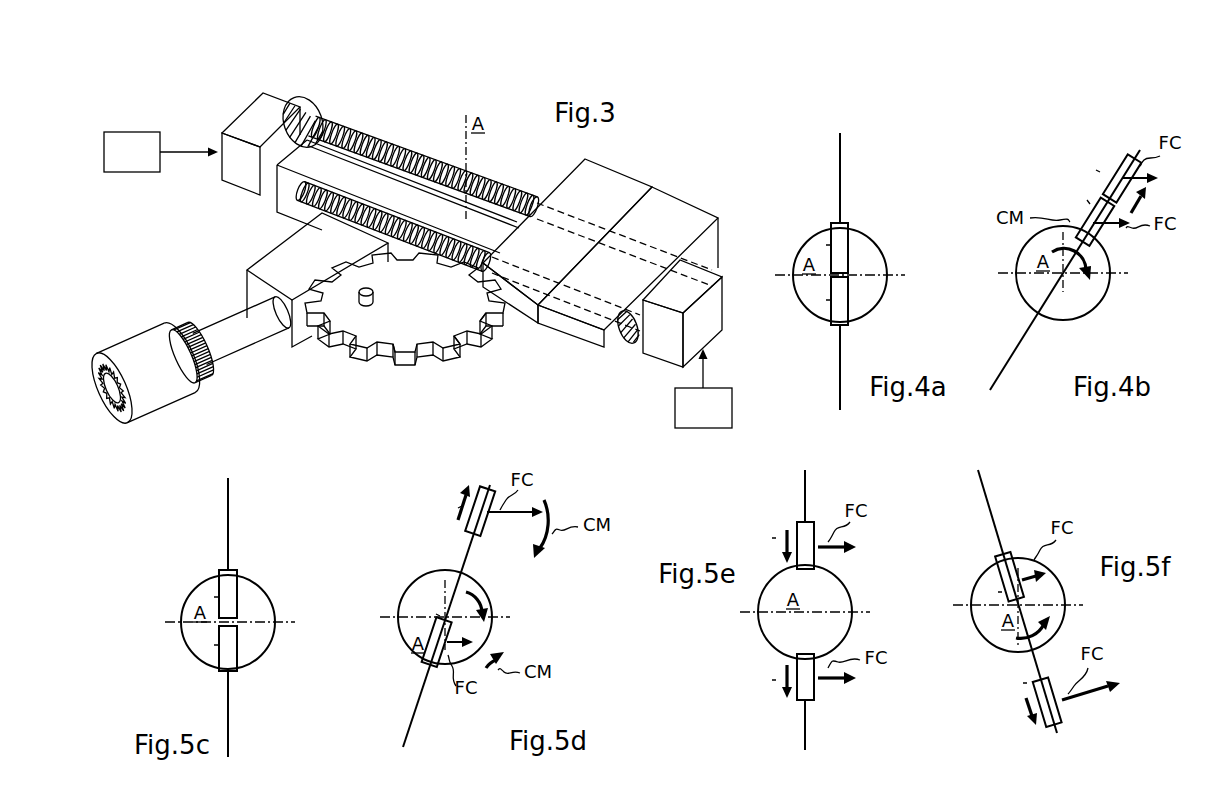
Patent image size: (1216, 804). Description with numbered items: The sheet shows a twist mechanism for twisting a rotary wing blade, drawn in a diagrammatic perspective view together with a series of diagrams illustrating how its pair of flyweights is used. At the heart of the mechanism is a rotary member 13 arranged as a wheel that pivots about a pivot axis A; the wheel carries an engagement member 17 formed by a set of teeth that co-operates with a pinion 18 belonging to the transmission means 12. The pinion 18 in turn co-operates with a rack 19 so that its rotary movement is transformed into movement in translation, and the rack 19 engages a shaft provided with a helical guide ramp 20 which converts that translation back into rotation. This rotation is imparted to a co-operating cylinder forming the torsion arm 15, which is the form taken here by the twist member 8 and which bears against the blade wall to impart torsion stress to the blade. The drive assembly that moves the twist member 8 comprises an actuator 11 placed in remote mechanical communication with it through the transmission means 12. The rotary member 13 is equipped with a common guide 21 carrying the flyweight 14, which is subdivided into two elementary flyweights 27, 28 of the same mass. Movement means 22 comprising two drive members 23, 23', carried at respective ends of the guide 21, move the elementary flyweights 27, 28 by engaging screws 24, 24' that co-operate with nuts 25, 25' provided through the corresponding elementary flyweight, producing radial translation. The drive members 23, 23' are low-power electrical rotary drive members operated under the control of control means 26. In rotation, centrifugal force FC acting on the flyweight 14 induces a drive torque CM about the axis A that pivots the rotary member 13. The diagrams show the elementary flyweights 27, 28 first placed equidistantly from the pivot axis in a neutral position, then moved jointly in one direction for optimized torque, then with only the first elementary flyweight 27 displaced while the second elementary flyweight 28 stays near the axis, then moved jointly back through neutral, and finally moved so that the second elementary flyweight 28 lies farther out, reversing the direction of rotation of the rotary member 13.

In FIG. 3, the twist member 8 is at (121, 322).
In FIG. 3, the actuator 11 is at (492, 344).
In FIG. 3, the transmission means 12 is at (407, 378).
In FIG. 3, the rotary member 13 is at (427, 282).
In FIG. 4A, the rotary member 13 is at (855, 300).
In FIG. 4B, the rotary member 13 is at (1071, 307).
In FIG. 5C, the rotary member 13 is at (245, 644).
In FIG. 5D, the rotary member 13 is at (422, 607).
In FIG. 5E, the rotary member 13 is at (813, 640).
In FIG. 5F, the rotary member 13 is at (1033, 601).
In FIG. 3, the flyweight 14 is at (610, 248).
In FIG. 4A, the flyweight 14 is at (823, 245).
In FIG. 4B, the flyweight 14 is at (1092, 166).
In FIG. 5C, the flyweight 14 is at (211, 597).
In FIG. 5D, the flyweight 14 is at (448, 508).
In FIG. 5E, the flyweight 14 is at (768, 538).
In FIG. 5F, the flyweight 14 is at (990, 592).
In FIG. 3, the torsion arm 15 is at (170, 398).
In FIG. 3, the engagement member 17 is at (458, 322).
In FIG. 3, the pinion 18 is at (382, 313).
In FIG. 3, the rack 19 is at (311, 262).
In FIG. 3, the helical guide ramp 20 is at (173, 326).
In FIG. 3, the common guide 21 is at (300, 221).
In FIG. 4A, the common guide 21 is at (840, 165).
In FIG. 4B, the common guide 21 is at (1008, 364).
In FIG. 5C, the common guide 21 is at (228, 512).
In FIG. 5D, the common guide 21 is at (410, 727).
In FIG. 5E, the common guide 21 is at (805, 728).
In FIG. 5F, the common guide 21 is at (988, 488).
In FIG. 3, the movement means 22 is at (327, 101).
In FIG. 3, the drive member 23 is at (261, 144).
In FIG. 3, the drive member 23' is at (682, 313).
In FIG. 3, the screw 24 is at (359, 226).
In FIG. 3, the screw 24' is at (424, 160).
In FIG. 3, the nut 25 is at (566, 294).
In FIG. 3, the nut 25' is at (618, 244).
In FIG. 3, the control means 26 is at (121, 163).
In FIG. 3, the first elementary flyweight 27 is at (650, 232).
In FIG. 4A, the first elementary flyweight 27 is at (848, 242).
In FIG. 4B, the first elementary flyweight 27 is at (1132, 153).
In FIG. 5C, the first elementary flyweight 27 is at (238, 592).
In FIG. 5D, the first elementary flyweight 27 is at (488, 532).
In FIG. 5E, the first elementary flyweight 27 is at (800, 522).
In FIG. 5F, the first elementary flyweight 27 is at (996, 572).
In FIG. 3, the second elementary flyweight 28 is at (586, 204).
In FIG. 4A, the second elementary flyweight 28 is at (848, 304).
In FIG. 4B, the second elementary flyweight 28 is at (1104, 230).
In FIG. 5C, the second elementary flyweight 28 is at (238, 656).
In FIG. 5D, the second elementary flyweight 28 is at (432, 676).
In FIG. 5E, the second elementary flyweight 28 is at (815, 694).
In FIG. 5F, the second elementary flyweight 28 is at (1062, 712).